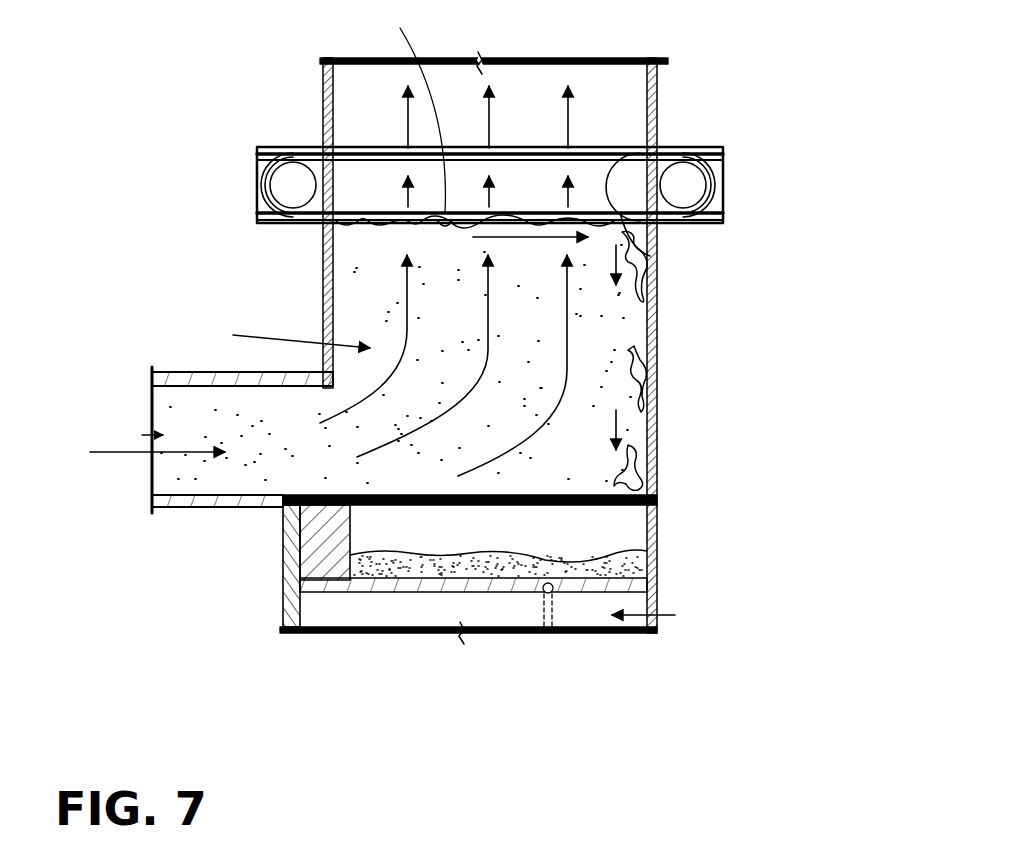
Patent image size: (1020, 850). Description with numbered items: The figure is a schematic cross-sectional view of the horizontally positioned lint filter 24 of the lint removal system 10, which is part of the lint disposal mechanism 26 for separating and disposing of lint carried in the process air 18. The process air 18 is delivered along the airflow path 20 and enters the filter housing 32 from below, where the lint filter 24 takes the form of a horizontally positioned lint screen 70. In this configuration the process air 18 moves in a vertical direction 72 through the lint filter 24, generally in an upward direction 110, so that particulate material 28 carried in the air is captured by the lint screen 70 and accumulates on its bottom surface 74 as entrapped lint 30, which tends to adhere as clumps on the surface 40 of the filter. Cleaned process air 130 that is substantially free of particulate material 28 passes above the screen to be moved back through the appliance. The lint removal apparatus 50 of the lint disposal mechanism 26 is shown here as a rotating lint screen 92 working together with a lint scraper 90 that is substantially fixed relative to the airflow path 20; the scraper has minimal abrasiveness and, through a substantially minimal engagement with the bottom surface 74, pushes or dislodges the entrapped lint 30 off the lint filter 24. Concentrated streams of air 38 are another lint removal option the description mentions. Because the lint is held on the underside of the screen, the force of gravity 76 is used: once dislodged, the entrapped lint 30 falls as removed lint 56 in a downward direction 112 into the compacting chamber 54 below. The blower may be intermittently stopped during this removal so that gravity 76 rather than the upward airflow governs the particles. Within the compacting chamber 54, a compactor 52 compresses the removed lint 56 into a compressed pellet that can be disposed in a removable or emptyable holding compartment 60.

The lint removal system 10 is at (757, 406).
The process air 18 is at (117, 450).
The airflow path 20 is at (225, 480).
The lint filter 24 is at (317, 79).
The lint disposal mechanism 26 is at (716, 250).
The particulate material 28 is at (380, 315).
The entrapped lint 30 is at (365, 225).
The filter housing 32 is at (310, 140).
The air 38 is at (550, 395).
The surface 40 is at (668, 242).
The lint removal apparatus 50 is at (728, 195).
The compactor 52 is at (333, 558).
The compacting chamber 54 is at (445, 535).
The removed lint 56 is at (640, 368).
The holding compartment 60 is at (671, 644).
The lint screen 70 is at (592, 162).
The vertical direction 72 is at (284, 335).
The bottom surface 74 is at (408, 26).
The gravity 76 is at (650, 262).
The lint scraper 90 is at (660, 150).
The rotating lint screen 92 is at (364, 144).
The upward direction 110 is at (590, 346).
The downward direction 112 is at (618, 422).
The cleaned process air 130 is at (572, 103).